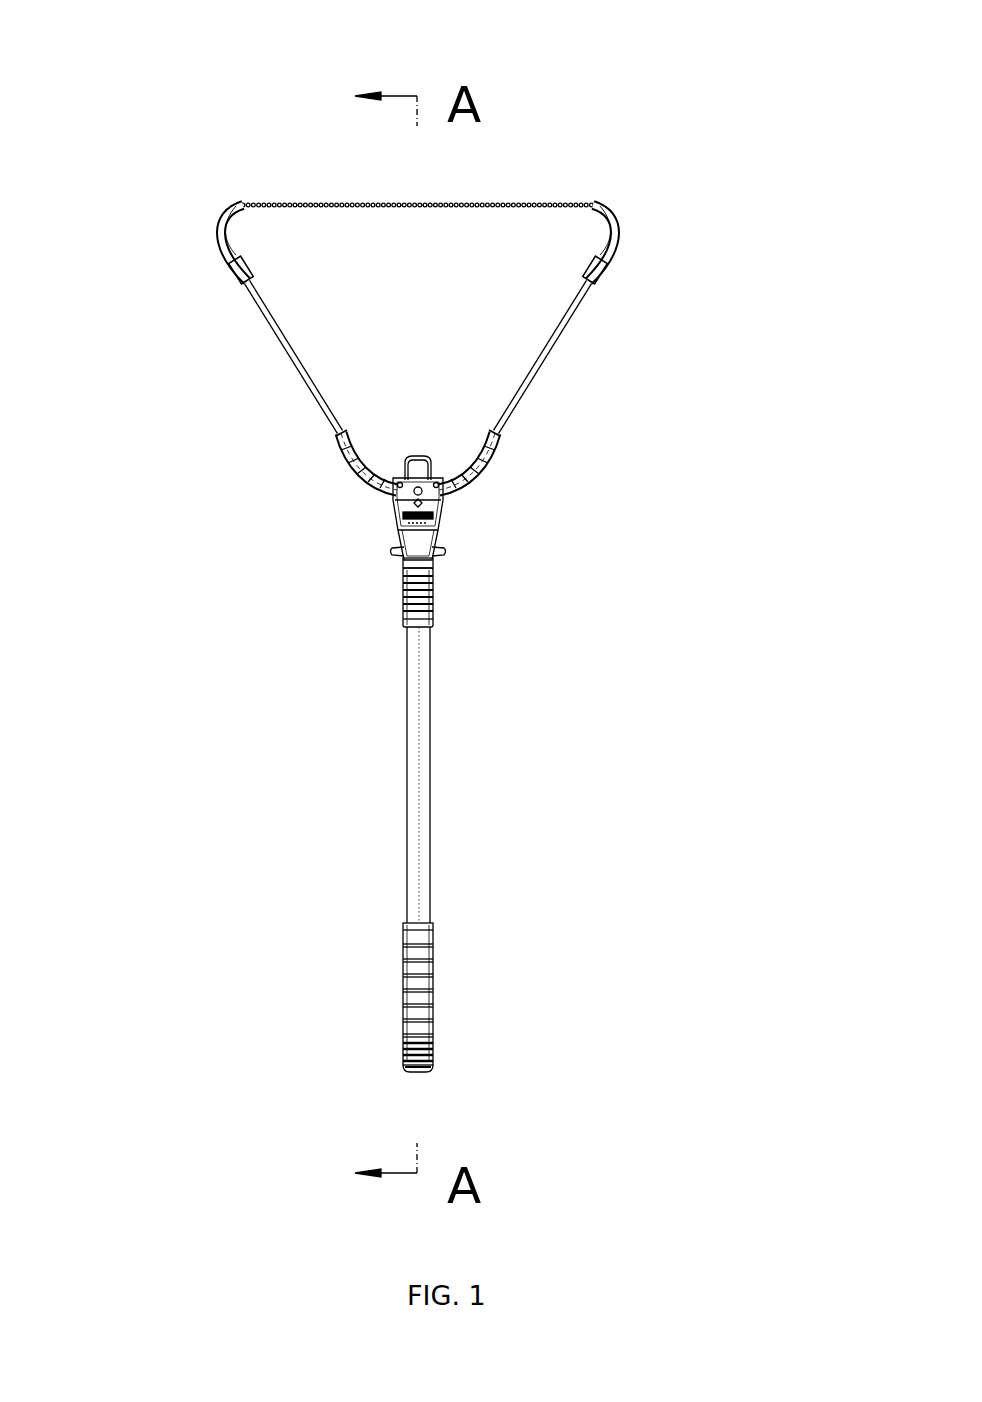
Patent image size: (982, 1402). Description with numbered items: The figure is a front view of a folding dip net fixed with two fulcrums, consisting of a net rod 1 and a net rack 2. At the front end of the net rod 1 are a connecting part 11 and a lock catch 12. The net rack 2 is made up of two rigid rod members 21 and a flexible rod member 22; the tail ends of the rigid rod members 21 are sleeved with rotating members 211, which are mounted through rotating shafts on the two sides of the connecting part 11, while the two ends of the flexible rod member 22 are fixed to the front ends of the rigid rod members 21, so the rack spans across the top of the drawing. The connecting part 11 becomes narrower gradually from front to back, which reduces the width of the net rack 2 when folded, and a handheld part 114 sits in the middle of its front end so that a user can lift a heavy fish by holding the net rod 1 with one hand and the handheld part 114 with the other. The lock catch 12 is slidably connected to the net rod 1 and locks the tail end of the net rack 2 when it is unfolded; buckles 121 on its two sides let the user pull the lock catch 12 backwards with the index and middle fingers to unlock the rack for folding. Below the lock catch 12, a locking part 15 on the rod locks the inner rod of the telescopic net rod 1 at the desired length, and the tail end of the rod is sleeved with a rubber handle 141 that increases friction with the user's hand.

The net rod 1 is at (440, 800).
The connecting part 11 is at (450, 497).
The handheld part 114 is at (430, 462).
The lock catch 12 is at (400, 528).
The buckle 121 is at (443, 552).
The rubber handle 141 is at (432, 985).
The locking part 15 is at (400, 600).
The net rack 2 is at (232, 328).
The rigid rod member 21 is at (540, 352).
The rotating member 211 is at (353, 470).
The flexible rod member 22 is at (460, 205).